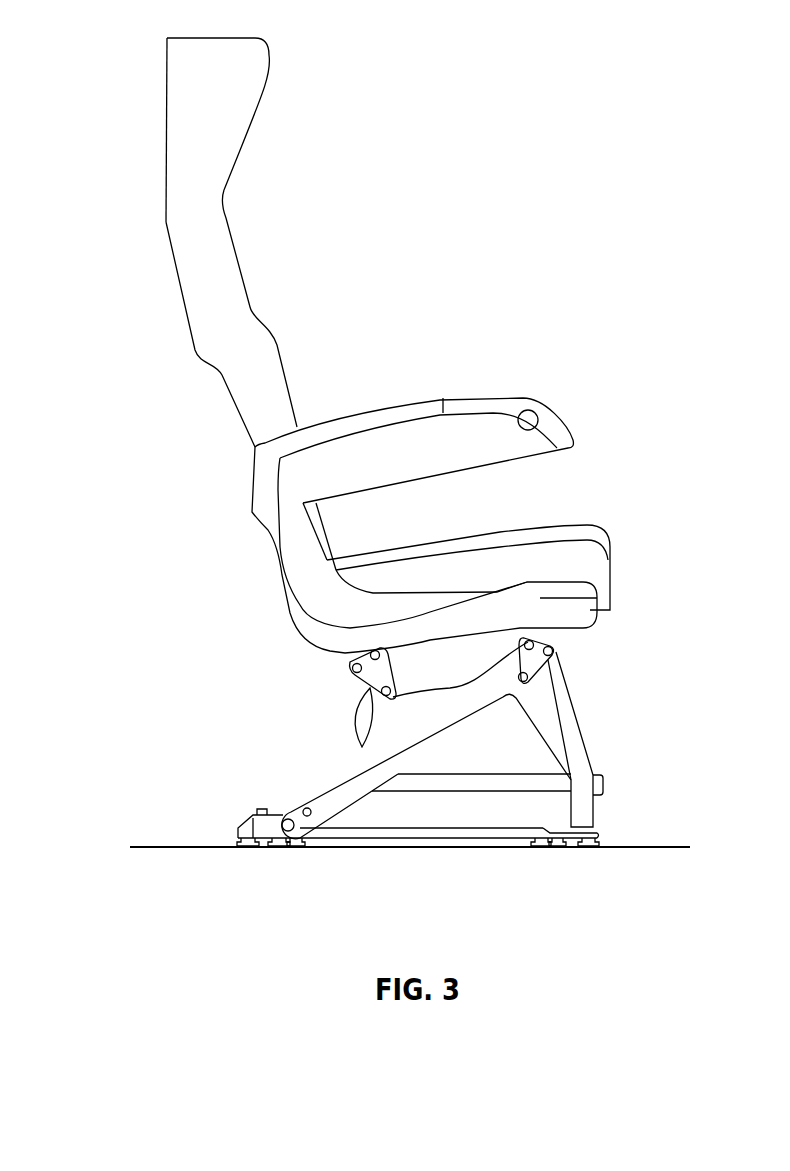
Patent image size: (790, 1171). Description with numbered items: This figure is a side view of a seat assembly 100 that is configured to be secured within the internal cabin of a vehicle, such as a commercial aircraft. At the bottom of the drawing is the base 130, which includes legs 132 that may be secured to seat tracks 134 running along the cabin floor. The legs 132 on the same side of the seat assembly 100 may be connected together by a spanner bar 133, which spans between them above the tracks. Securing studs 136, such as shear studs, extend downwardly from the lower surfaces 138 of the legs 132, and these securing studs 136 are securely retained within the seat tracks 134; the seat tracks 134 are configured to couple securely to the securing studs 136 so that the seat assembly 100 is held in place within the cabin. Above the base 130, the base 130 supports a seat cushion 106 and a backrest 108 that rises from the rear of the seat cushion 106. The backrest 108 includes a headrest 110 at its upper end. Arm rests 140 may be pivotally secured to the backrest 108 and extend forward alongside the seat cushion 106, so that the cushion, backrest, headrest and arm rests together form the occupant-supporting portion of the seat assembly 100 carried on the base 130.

The seat assembly 100 is at (147, 39).
The seat cushion 106 is at (593, 527).
The backrest 108 is at (166, 177).
The headrest 110 is at (238, 153).
The base 130 is at (350, 758).
The legs 132 is at (238, 836).
The spanner bar 133 is at (507, 773).
The seat tracks 134 is at (317, 848).
The securing studs 136 is at (247, 848).
The lower surfaces 138 is at (253, 814).
The arm rests 140 is at (477, 398).